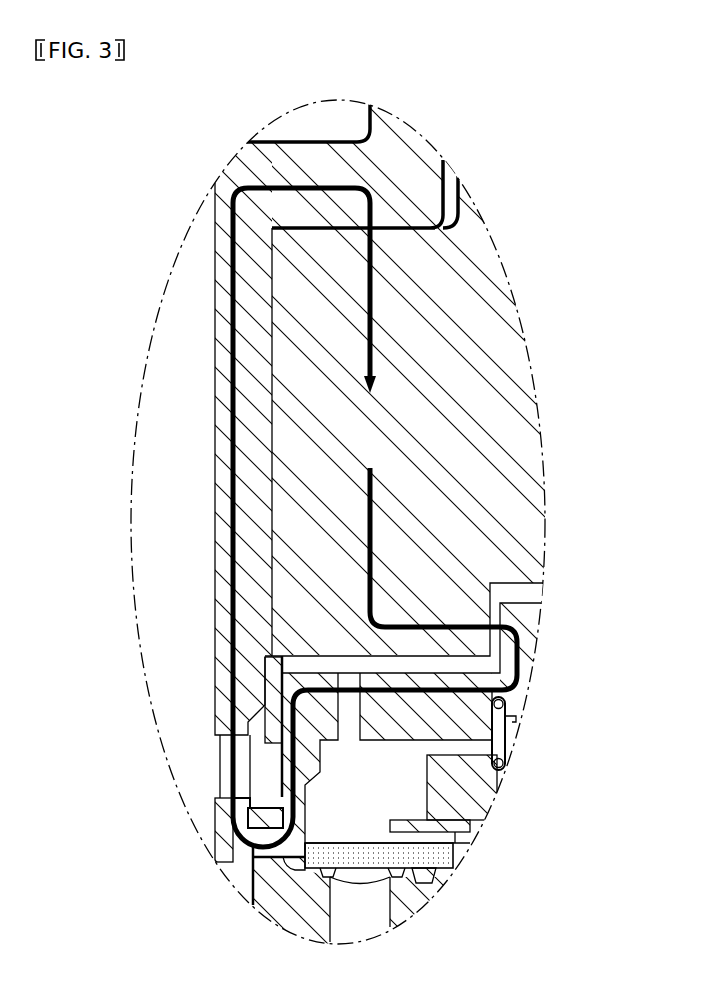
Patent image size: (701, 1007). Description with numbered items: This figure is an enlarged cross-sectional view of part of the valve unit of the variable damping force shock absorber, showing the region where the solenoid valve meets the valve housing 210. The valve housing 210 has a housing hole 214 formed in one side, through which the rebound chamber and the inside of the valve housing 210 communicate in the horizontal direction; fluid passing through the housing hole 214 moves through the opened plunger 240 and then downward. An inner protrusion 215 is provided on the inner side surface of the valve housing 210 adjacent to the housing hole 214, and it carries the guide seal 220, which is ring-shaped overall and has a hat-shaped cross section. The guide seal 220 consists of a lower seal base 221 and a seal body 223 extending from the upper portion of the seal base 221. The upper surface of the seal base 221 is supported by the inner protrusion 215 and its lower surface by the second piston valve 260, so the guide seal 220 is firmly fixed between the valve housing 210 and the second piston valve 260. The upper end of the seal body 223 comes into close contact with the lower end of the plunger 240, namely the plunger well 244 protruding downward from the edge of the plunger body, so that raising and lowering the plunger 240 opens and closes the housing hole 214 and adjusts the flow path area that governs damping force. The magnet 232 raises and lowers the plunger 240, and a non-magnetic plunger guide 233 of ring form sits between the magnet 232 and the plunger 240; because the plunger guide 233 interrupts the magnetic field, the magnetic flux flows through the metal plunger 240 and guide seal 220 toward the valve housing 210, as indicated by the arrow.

The valve housing 210 is at (233, 865).
The housing hole 214 is at (230, 795).
The inner protrusion 215 is at (270, 820).
The guide seal 220 is at (558, 812).
The seal base 221 is at (410, 870).
The seal body 223 is at (307, 800).
The magnet 232 is at (293, 561).
The plunger guide 233 is at (270, 697).
The plunger 240 is at (308, 768).
The plunger well 244 is at (350, 503).
The second piston valve 260 is at (290, 912).